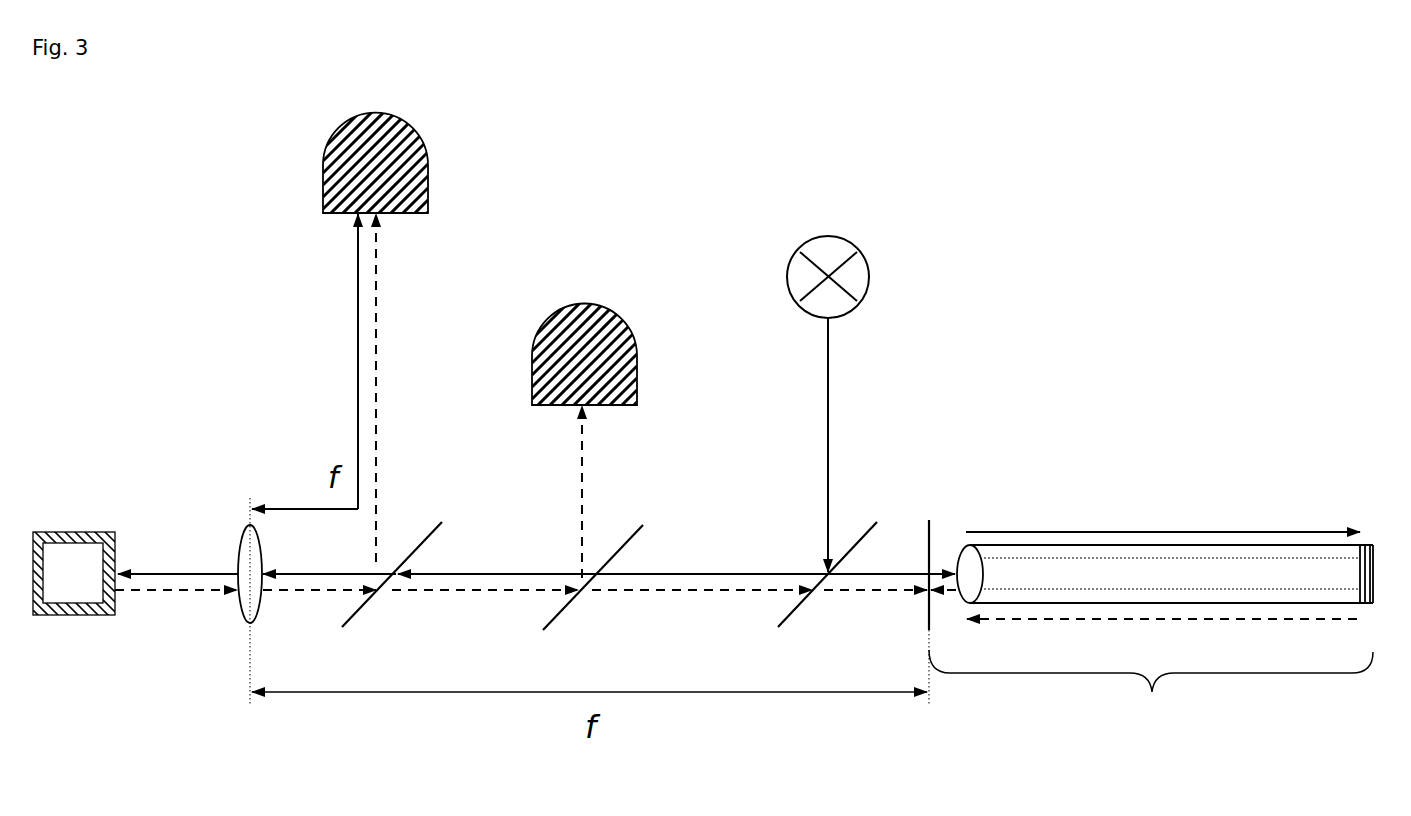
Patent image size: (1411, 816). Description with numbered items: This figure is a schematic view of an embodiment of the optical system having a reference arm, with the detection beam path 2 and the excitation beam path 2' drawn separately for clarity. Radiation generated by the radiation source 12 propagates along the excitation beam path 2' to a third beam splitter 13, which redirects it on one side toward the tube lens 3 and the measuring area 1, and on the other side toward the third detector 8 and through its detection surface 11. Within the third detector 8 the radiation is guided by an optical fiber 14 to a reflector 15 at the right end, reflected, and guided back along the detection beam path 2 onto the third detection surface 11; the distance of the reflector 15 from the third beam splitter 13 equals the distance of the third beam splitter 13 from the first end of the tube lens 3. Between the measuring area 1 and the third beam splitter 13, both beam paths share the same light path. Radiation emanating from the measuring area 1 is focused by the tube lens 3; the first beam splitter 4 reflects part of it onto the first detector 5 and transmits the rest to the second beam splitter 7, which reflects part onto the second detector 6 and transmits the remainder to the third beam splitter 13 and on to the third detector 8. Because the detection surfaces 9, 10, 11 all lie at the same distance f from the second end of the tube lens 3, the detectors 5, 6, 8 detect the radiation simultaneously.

The measuring area 1 is at (75, 531).
The detection beam path 2 is at (736, 443).
The excitation beam path 2' is at (739, 394).
The tube lens 3 is at (237, 530).
The first beam splitter 4 is at (358, 614).
The first detector 5 is at (433, 160).
The second detector 6 is at (620, 312).
The second beam splitter 7 is at (562, 613).
The third detector 8 is at (1151, 645).
The first detection surface 9 is at (420, 216).
The second detection surface 10 is at (631, 409).
The third detection surface 11 is at (925, 604).
The radiation source 12 is at (799, 247).
The third beam splitter 13 is at (807, 600).
The optical fiber 14 is at (1308, 607).
The reflector 15 is at (1372, 540).